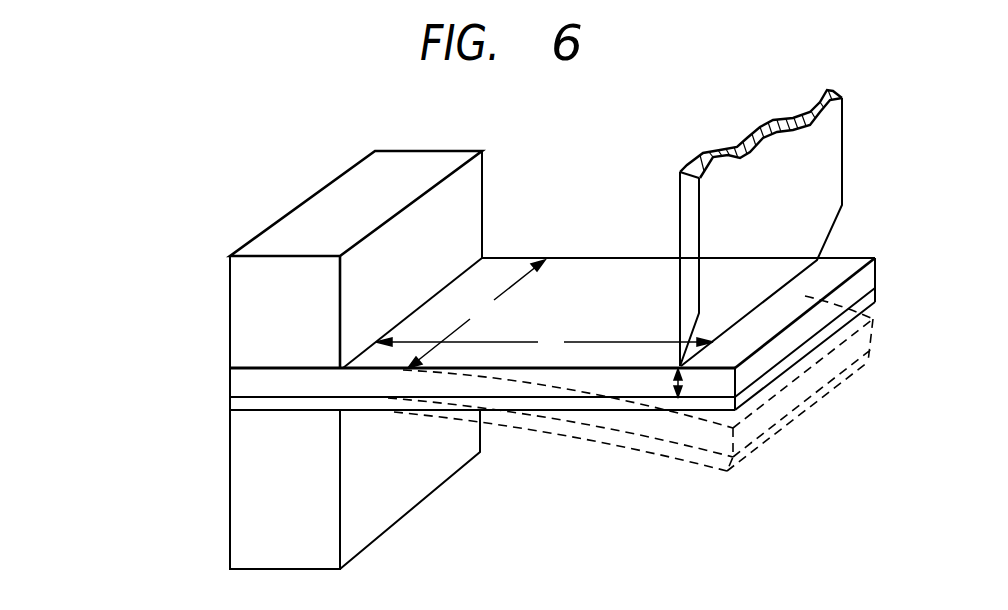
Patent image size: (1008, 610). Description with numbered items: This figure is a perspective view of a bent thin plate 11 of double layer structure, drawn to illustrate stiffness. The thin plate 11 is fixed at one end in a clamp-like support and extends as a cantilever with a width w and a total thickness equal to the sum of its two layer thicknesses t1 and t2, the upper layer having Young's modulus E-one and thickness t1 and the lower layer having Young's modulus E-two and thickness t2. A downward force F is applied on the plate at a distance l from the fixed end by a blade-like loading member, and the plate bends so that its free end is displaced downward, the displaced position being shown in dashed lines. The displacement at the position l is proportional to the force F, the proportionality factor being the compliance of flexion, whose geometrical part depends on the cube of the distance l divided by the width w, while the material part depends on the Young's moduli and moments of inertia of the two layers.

The thin plate 11 is at (849, 268).
The downward force F is at (767, 176).
The distance from fixed end l is at (544, 340).
The width w is at (476, 314).
The thickness of first layer t1 is at (221, 350).
The thickness of second layer t2 is at (221, 452).